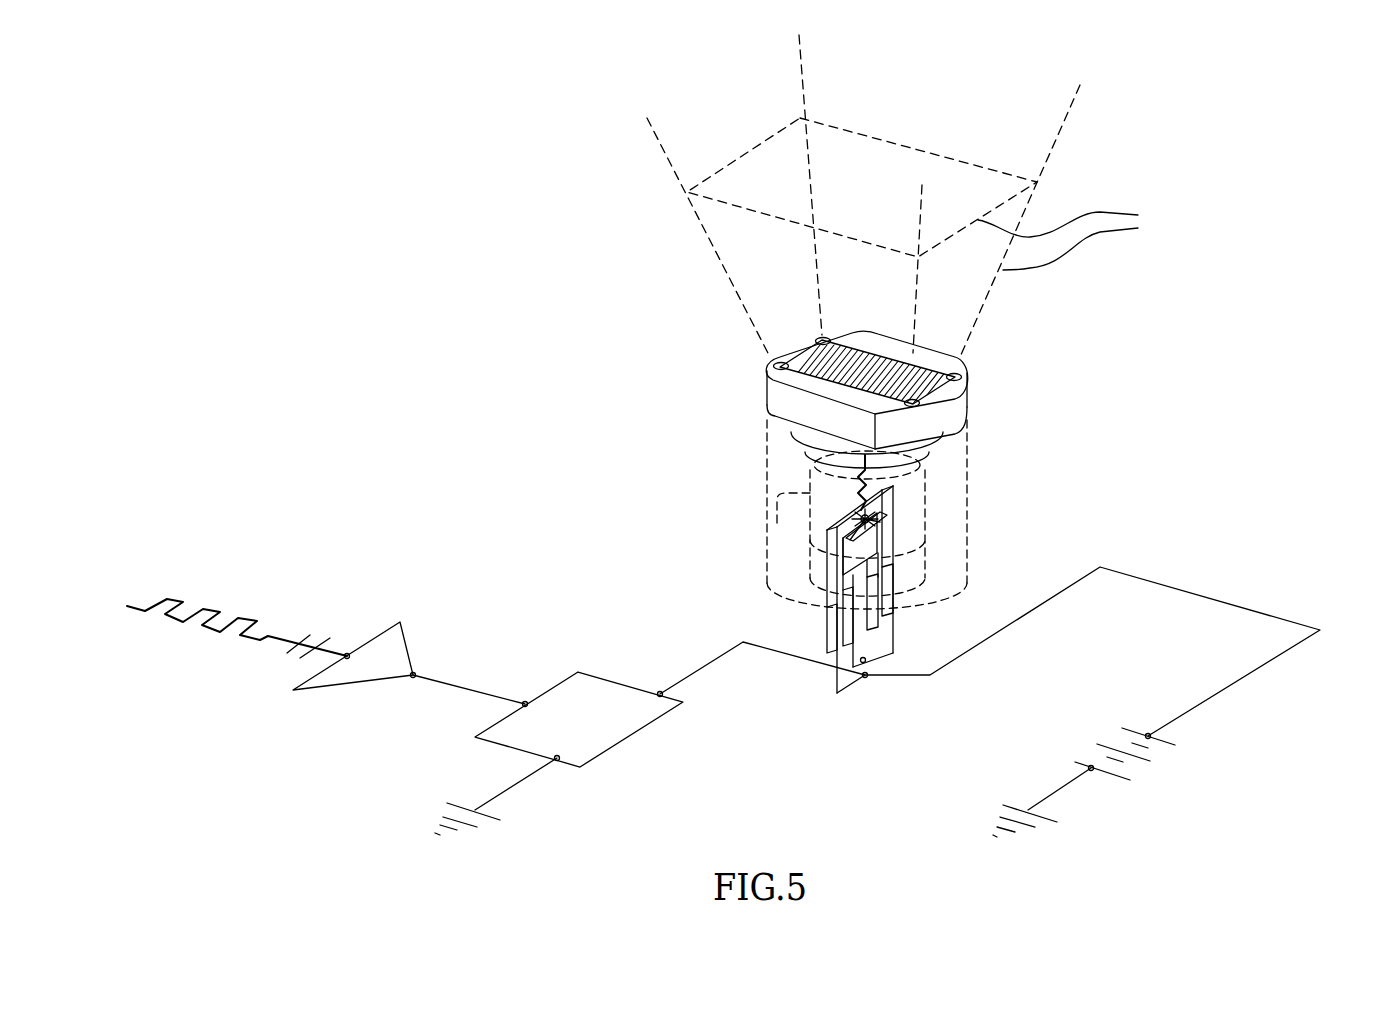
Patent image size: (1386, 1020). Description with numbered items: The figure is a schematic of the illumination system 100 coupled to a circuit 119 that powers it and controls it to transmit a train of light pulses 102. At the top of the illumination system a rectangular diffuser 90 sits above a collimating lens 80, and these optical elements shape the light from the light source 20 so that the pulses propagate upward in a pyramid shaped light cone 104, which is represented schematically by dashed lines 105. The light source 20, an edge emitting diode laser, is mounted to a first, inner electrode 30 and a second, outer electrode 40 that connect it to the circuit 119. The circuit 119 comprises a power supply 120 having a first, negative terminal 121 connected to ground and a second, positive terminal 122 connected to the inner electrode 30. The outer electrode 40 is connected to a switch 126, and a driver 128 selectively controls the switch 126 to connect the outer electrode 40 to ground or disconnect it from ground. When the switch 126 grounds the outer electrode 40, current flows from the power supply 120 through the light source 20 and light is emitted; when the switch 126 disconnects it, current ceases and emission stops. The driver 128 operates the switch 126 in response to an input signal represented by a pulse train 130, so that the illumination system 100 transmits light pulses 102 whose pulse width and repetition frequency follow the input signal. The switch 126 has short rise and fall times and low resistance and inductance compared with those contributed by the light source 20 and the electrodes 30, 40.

The illumination system 100 is at (742, 423).
The light cone 104 is at (876, 160).
The dashed lines 105 is at (1079, 235).
The diffuser 90 is at (953, 353).
The collimating lens 80 is at (907, 467).
The light pulses 102 is at (897, 480).
The light source 20 is at (887, 508).
The first electrode 30 is at (890, 620).
The second electrode 40 is at (811, 633).
The circuit 119 is at (543, 554).
The pulse train 130 is at (228, 620).
The driver 128 is at (345, 685).
The switch 126 is at (635, 687).
The power supply 120 is at (1153, 768).
The negative terminal 121 is at (1100, 778).
The positive terminal 122 is at (1158, 739).